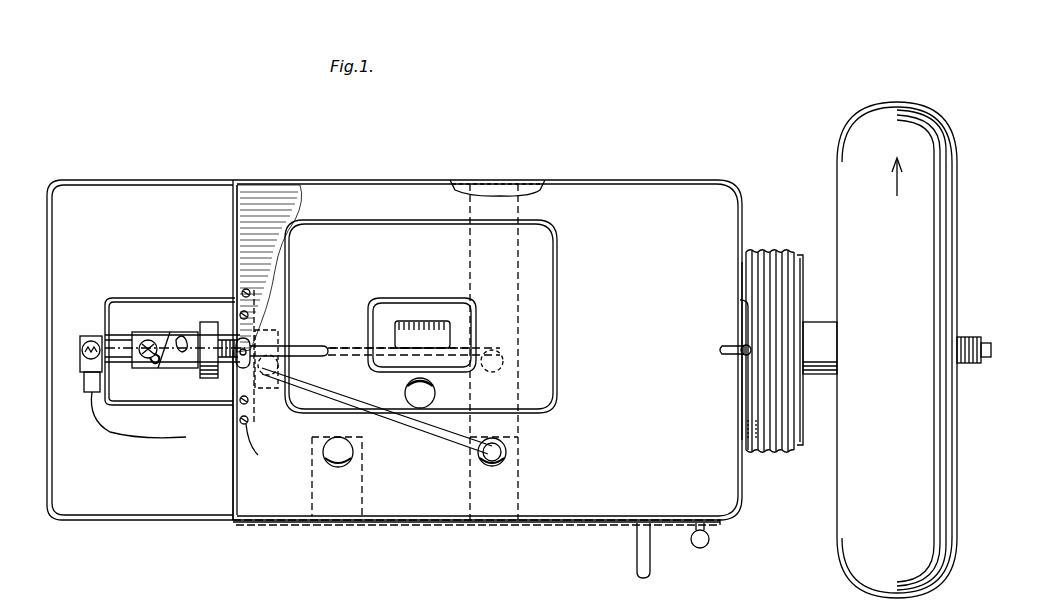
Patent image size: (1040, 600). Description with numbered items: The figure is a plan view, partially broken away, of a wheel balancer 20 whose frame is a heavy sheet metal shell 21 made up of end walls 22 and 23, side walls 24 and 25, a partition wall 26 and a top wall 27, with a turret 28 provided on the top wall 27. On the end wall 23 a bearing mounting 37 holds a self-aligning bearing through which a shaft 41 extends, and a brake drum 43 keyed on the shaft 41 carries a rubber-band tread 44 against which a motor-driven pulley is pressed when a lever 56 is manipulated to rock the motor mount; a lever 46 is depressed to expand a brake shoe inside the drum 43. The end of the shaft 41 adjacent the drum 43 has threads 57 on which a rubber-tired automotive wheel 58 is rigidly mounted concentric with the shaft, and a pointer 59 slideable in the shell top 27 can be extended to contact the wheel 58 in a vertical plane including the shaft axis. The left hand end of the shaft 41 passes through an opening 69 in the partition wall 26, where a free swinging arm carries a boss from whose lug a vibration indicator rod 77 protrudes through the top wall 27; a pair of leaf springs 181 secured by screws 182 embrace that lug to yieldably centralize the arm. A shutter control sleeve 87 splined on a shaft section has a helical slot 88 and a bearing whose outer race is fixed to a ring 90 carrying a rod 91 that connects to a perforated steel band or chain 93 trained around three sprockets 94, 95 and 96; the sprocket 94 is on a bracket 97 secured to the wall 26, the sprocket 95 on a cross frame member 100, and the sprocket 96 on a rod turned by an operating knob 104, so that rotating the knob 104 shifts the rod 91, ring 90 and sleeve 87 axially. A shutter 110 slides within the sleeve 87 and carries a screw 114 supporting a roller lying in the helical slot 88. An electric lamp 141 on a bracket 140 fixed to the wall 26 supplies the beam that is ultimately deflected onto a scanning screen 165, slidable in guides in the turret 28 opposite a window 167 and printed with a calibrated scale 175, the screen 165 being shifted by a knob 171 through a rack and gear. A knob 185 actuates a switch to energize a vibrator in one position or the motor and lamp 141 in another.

The wheel balancer 20 is at (710, 142).
The sheet metal shell 21 is at (253, 178).
The end wall 22 is at (47, 372).
The end wall 23 is at (742, 470).
The side wall 24 is at (500, 182).
The side wall 25 is at (210, 521).
The partition wall 26 is at (233, 468).
The top wall 27 is at (626, 340).
The turret 28 is at (557, 292).
The bearing mounting 37 is at (744, 400).
The shaft 41 is at (820, 376).
The brake drum 43 is at (800, 302).
The rubber-band tread 44 is at (766, 250).
The lever 46 is at (709, 539).
The lever 56 is at (637, 548).
The threads 57 is at (968, 337).
The rubber-tired automotive wheel 58 is at (938, 232).
The pointer 59 is at (736, 346).
The opening 69 is at (235, 300).
The vibration indicator rod 77 is at (240, 364).
The shutter control sleeve 87 is at (160, 332).
The helical slot 88 is at (156, 364).
The ring 90 is at (210, 323).
The rod 91 is at (300, 345).
The perforated steel band or chain 93 is at (340, 347).
The sprocket 94 is at (280, 366).
The sprocket 95 is at (491, 373).
The sprocket 96 is at (484, 446).
The bracket 97 is at (266, 328).
The cross frame member 100 is at (520, 492).
The operating knob 104 is at (506, 452).
The shutter 110 is at (120, 335).
The screw 114 is at (146, 358).
The bracket 140 is at (138, 297).
The electric lamp 141 is at (90, 338).
The scanning screen 165 is at (460, 312).
The window 167 is at (398, 300).
The knob 171 is at (405, 392).
The calibrated scale 175 is at (426, 321).
The leaf springs 181 is at (260, 290).
The screws 182 is at (248, 424).
The knob 185 is at (352, 452).